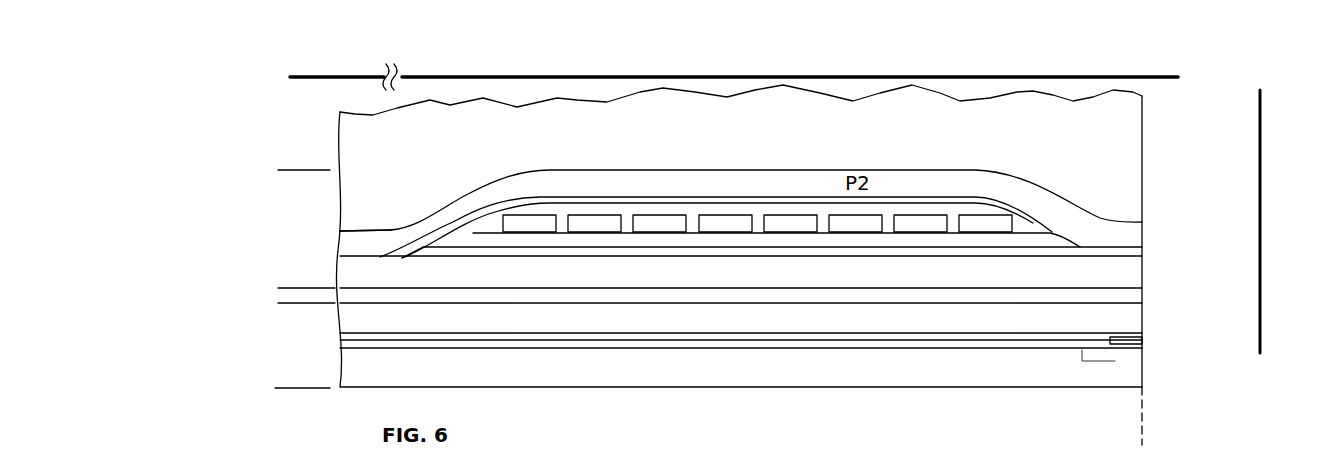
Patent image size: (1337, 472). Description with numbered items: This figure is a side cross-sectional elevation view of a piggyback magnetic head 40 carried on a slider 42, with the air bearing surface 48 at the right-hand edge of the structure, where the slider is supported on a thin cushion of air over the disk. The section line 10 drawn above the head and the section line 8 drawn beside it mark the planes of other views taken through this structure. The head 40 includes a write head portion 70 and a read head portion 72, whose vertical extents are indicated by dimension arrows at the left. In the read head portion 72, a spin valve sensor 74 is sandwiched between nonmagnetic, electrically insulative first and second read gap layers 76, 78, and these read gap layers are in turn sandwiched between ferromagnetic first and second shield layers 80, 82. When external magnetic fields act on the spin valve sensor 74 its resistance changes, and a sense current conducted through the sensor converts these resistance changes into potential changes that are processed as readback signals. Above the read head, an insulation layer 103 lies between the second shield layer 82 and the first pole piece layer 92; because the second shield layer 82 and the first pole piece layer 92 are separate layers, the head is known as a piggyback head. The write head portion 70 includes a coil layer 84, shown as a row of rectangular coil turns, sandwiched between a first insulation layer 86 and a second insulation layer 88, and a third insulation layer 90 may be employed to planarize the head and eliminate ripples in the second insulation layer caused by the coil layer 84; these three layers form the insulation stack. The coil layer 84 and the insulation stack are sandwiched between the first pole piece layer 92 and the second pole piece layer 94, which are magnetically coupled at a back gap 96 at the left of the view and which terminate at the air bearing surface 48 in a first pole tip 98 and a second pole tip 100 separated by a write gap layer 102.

The section line 10-10 (disk) 10 is at (298, 35).
The section line 8- 8 is at (1280, 345).
The magnetic head 40 is at (318, 118).
The slider 42 is at (1127, 123).
The second pole piece layer 94 is at (922, 180).
The third insulation layer 90 is at (568, 200).
The second insulation layer 88 is at (1028, 223).
The back gap 96 is at (378, 257).
The coil layer 84 is at (790, 218).
The first insulation layer 86 is at (697, 242).
The second pole tip 100 is at (1137, 230).
The write gap layer 102 is at (1142, 252).
The first pole tip 98 is at (1142, 275).
The first pole piece layer 92 is at (1060, 277).
The insulation layer 103 is at (966, 295).
The second shield layer 82 is at (1012, 320).
The second read gap layer 78 is at (773, 330).
The first read gap layer 76 is at (808, 350).
The first shield layer 80 is at (908, 370).
The spin valve sensor 74 is at (1142, 340).
The air bearing surface 48 is at (1142, 440).
The write head portion 70 is at (287, 276).
The read head portion 72 is at (287, 376).